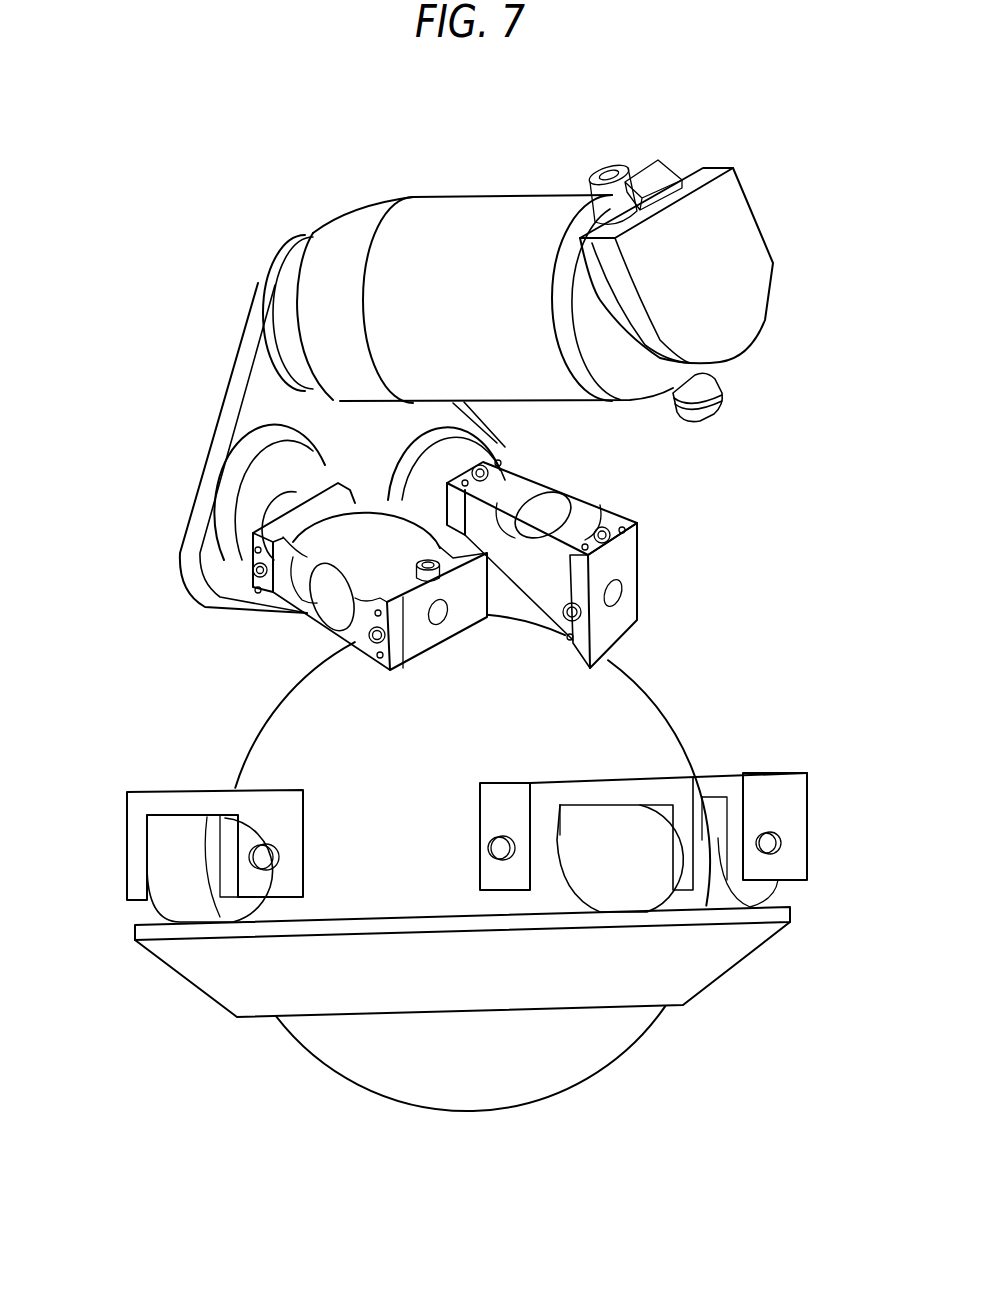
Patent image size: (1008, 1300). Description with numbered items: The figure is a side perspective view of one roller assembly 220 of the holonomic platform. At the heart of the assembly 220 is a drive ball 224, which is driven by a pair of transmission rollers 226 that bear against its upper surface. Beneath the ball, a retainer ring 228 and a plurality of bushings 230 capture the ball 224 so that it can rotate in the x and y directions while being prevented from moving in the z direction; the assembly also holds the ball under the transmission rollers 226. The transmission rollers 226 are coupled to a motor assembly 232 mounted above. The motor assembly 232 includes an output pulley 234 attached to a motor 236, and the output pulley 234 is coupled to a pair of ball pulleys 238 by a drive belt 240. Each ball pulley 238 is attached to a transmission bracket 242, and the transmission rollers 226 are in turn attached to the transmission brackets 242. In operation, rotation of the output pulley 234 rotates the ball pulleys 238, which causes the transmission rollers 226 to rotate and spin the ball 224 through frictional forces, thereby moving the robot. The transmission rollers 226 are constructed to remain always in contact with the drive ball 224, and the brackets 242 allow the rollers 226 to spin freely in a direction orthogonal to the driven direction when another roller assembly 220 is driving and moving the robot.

The roller assembly 220 is at (777, 551).
The drive ball 224 is at (543, 1062).
The transmission rollers 226 is at (320, 607).
The retainer ring 228 is at (220, 973).
The bushings 230 is at (150, 800).
The motor assembly 232 is at (505, 258).
The output pulley 234 is at (270, 285).
The motor 236 is at (343, 245).
The ball pulleys 238 is at (212, 528).
The drive belt 240 is at (220, 417).
The transmission brackets 242 is at (320, 500).